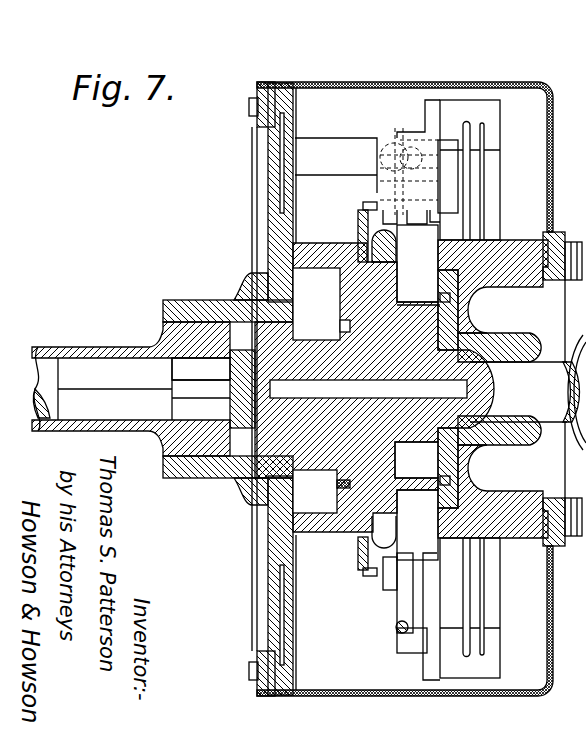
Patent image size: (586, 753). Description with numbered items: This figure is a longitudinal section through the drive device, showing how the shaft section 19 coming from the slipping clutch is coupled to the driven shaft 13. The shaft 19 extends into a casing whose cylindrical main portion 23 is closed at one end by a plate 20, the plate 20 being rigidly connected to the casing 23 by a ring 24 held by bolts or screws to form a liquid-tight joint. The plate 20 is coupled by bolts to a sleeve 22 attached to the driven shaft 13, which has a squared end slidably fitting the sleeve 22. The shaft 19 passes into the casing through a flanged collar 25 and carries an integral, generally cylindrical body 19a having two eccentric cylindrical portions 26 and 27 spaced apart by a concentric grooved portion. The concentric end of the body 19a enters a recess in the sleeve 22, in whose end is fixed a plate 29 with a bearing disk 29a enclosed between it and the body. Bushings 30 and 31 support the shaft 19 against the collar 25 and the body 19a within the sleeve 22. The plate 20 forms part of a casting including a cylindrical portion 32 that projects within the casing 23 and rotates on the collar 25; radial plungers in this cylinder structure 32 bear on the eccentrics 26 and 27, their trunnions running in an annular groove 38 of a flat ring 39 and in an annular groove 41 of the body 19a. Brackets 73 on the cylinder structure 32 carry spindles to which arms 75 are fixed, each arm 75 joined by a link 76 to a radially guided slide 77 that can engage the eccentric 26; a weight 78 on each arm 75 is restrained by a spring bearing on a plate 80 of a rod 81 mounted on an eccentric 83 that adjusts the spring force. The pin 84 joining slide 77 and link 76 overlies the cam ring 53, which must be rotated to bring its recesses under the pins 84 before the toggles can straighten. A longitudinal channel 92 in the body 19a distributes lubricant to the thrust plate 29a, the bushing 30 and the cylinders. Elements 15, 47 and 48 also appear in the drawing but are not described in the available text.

The driven shaft 13 is at (50, 422).
The lever 15 is at (420, 655).
The shaft section 19 is at (525, 392).
The cylindrical body 19a is at (374, 387).
The plate 20 is at (268, 207).
The sleeve 22 is at (96, 347).
The cylindrical main portion of casing 23 is at (343, 84).
The ring 24 is at (262, 84).
The flanged collar 25 is at (536, 282).
The eccentric cylindrical portion 26 is at (416, 460).
The eccentric cylindrical portion 27 is at (322, 322).
The plate 29 is at (232, 408).
The bearing disk 29a is at (232, 378).
The bushing 30 is at (522, 346).
The bushing 31 is at (222, 318).
The cylindrical portion 32 is at (512, 268).
The annular groove 38 is at (450, 297).
The flat ring 39 is at (465, 312).
The annular groove 41 is at (343, 322).
The wheel rim 47 is at (580, 446).
The ring 48 is at (581, 366).
The cam ring 53 is at (360, 222).
The bracket 73 is at (488, 181).
The arm 75 is at (424, 100).
The link 76 is at (404, 224).
The plunger or slide 77 is at (418, 392).
The weight 78 is at (458, 210).
The plate 80 is at (390, 142).
The rod 81 is at (401, 134).
The eccentric 83 is at (336, 165).
The pin 84 is at (370, 202).
The longitudinally extending channel 92 is at (368, 389).